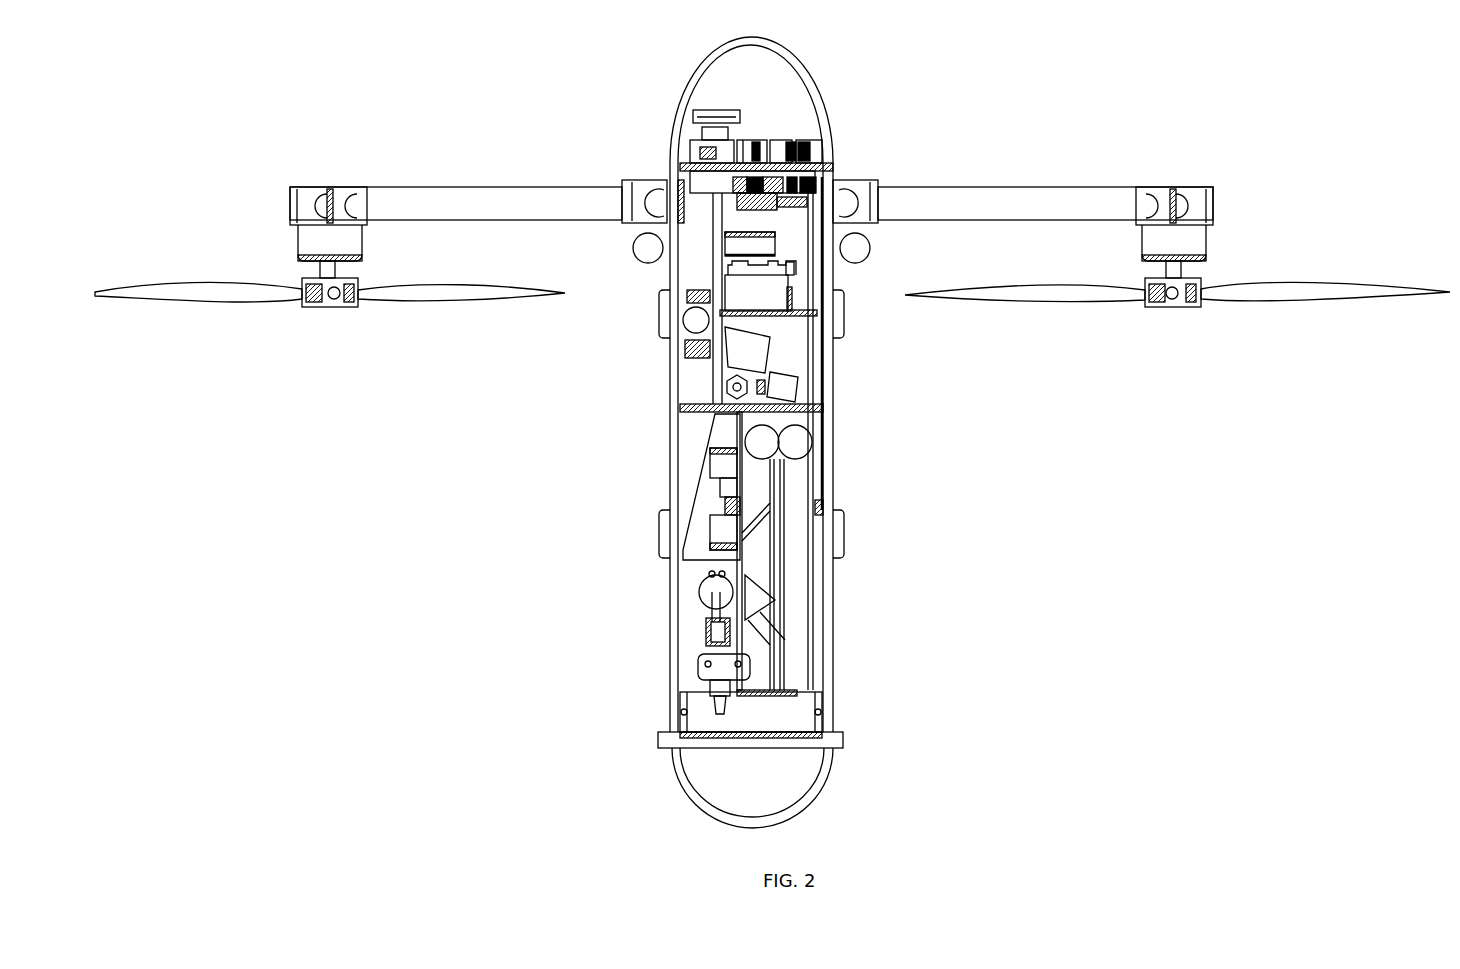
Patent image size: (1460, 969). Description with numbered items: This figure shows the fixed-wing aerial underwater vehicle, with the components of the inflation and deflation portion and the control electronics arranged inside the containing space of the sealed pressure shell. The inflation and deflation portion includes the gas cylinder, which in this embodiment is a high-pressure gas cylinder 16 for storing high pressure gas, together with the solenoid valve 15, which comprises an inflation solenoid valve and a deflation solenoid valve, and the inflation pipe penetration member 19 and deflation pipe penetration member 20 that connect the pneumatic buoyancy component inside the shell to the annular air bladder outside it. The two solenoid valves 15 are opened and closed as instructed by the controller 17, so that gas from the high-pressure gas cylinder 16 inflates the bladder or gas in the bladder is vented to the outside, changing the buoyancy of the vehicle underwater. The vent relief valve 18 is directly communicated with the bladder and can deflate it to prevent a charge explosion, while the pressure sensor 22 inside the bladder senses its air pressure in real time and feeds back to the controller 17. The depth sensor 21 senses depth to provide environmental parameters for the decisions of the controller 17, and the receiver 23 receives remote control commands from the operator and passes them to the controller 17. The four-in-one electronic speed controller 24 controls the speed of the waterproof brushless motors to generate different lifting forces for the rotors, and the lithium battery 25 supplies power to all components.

The solenoid valve 15 is at (700, 674).
The high-pressure gas cylinder 16 is at (705, 505).
The controller 17 is at (745, 304).
The vent relief valve 18 is at (694, 115).
The inflation pipe penetration member 19 is at (748, 140).
The deflation pipe penetration member 20 is at (782, 136).
The depth sensor 21 is at (822, 147).
The pressure sensor 22 is at (757, 214).
The receiver 23 is at (776, 247).
The four-in-one electronic speed controller 24 is at (797, 275).
The lithium battery 25 is at (800, 562).